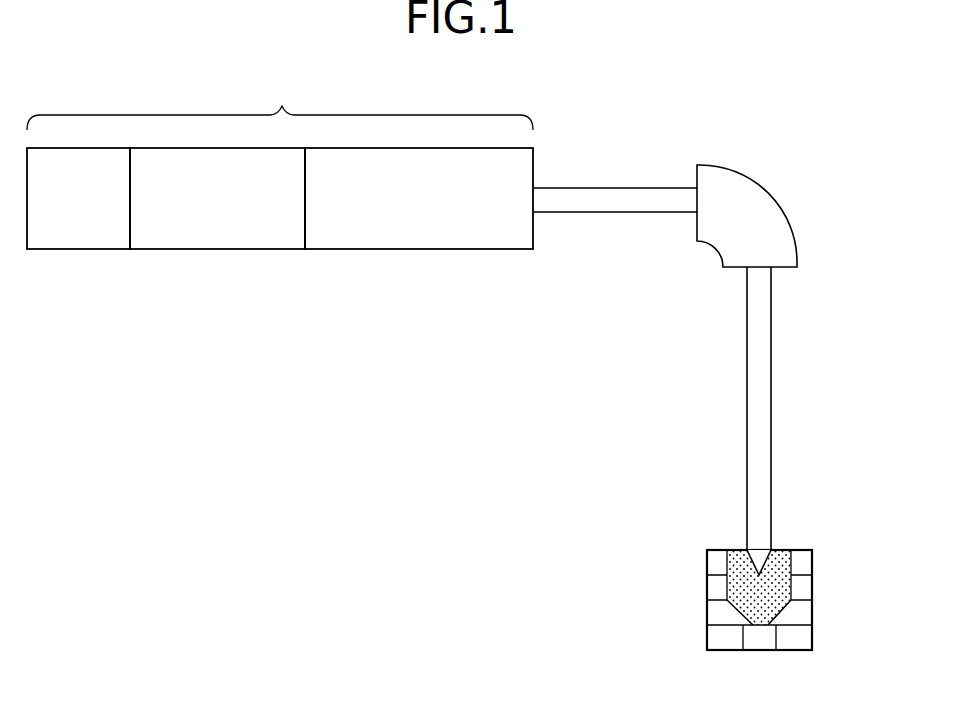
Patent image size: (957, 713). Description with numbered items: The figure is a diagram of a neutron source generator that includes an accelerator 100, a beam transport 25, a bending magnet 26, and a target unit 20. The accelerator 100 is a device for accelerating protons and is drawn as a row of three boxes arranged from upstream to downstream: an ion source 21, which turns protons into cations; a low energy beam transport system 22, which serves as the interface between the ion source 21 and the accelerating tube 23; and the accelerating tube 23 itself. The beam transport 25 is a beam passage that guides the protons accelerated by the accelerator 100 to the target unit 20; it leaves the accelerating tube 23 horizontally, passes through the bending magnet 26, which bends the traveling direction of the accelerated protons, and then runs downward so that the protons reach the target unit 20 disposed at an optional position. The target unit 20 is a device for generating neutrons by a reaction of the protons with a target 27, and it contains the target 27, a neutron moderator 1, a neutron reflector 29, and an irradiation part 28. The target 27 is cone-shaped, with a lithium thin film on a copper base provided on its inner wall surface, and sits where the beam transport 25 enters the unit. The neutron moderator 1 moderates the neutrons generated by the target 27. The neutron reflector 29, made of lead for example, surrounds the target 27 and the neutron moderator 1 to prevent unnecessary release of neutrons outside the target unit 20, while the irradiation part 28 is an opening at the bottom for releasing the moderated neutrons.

The accelerator 100 is at (282, 106).
The ion source 21 is at (75, 250).
The low energy beam transport system 22 is at (224, 250).
The accelerating tube 23 is at (426, 250).
The beam transport 25 is at (620, 196).
The bending magnet 26 is at (760, 202).
The target unit 20 is at (828, 567).
The neutron moderator 1 is at (778, 585).
The target 27 is at (758, 557).
The irradiation part 28 is at (759, 652).
The neutron reflector 29 is at (801, 612).